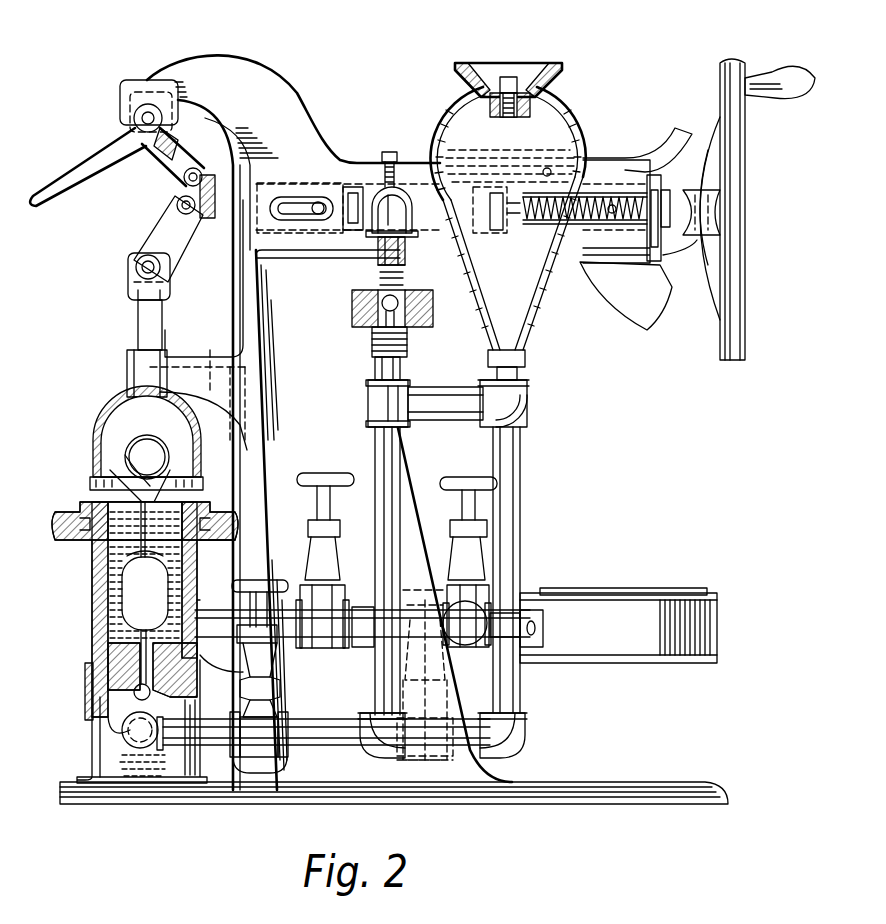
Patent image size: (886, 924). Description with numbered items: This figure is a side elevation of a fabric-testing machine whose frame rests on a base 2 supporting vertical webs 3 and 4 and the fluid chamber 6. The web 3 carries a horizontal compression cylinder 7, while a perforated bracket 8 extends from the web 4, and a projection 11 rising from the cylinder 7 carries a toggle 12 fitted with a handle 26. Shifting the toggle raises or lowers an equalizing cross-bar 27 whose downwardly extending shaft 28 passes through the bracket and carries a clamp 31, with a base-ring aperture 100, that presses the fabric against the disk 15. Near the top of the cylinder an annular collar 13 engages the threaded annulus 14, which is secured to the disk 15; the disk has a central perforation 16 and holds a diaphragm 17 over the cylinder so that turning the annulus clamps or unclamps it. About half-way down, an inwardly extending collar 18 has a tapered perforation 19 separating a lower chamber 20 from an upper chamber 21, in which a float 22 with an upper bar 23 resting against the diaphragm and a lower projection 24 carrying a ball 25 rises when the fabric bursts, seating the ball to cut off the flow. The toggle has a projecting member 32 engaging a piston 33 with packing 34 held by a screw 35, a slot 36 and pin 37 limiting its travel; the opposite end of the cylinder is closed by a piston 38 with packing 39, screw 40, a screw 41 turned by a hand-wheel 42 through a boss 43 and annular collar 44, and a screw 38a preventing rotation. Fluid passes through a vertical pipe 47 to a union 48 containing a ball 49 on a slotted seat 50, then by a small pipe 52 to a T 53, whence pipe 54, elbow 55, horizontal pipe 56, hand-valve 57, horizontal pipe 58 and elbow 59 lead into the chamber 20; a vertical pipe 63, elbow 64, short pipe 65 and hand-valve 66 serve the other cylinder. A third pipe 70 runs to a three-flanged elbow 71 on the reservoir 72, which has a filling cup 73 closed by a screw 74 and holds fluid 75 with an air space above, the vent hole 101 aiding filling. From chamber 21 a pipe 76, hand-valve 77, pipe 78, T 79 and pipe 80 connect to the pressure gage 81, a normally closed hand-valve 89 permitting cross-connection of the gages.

The base 2 is at (598, 808).
The vertical web 3 is at (416, 500).
The vertical web 4 is at (237, 445).
The fluid chamber 6 is at (198, 604).
The compression cylinder 7 is at (415, 156).
The perforated bracket 8 is at (217, 353).
The projection 11 is at (238, 55).
The toggle 12 is at (157, 150).
The annular collar 13 is at (90, 534).
The annulus 14 is at (208, 540).
The disk 15 is at (84, 510).
The central perforation 16 is at (196, 480).
The diaphragm 17 is at (115, 490).
The perforated collar 18 is at (132, 648).
The perforation 19 is at (88, 676).
The chamber 20 is at (100, 706).
The chamber 21 is at (92, 600).
The float 22 is at (145, 575).
The bar 23 is at (144, 573).
The second projection 24 is at (152, 636).
The ball 25 is at (133, 717).
The handle 26 is at (92, 166).
The equalizing cross-bar 27 is at (123, 286).
The shaft 28 is at (129, 343).
The clamp 31 is at (97, 440).
The projecting member 32 is at (219, 210).
The piston 33 is at (307, 239).
The packing 34 is at (372, 188).
The screw 35 is at (355, 232).
The slot 36 is at (288, 196).
The pin 37 is at (317, 201).
The piston 38 is at (622, 240).
The screw 38a is at (550, 168).
The packing 39 is at (493, 240).
The screw 40 is at (490, 200).
The screw 41 is at (622, 193).
The hand-wheel 42 is at (713, 89).
The boss 43 is at (659, 258).
The annular collar 44 is at (660, 180).
The vertical pipe 47 is at (410, 249).
The union 48 is at (348, 316).
The ball 49 is at (398, 300).
The seat 50 is at (406, 335).
The small pipe 52 is at (375, 367).
The T 53 is at (368, 397).
The pipe 54 is at (379, 441).
The elbow 55 is at (396, 758).
The horizontal pipe 56 is at (352, 757).
The hand-valve 57 is at (284, 706).
The horizontal pipe 58 is at (215, 716).
The elbow 59 is at (123, 745).
The vertical pipe 63 is at (527, 515).
The elbow 64 is at (524, 734).
The short pipe 65 is at (473, 709).
The hand-valve 66 is at (429, 769).
The third pipe 70 is at (450, 422).
The three-flanged elbow 71 is at (518, 418).
The reservoir 72 is at (540, 292).
The cup 73 is at (478, 68).
The screw 74 is at (514, 70).
The fluid 75 is at (528, 150).
The pipe 76 is at (250, 640).
The hand-valve 77 is at (318, 566).
The pipe 78 is at (364, 648).
The T 79 is at (470, 648).
The pipe 80 is at (505, 646).
The pressure gage 81 is at (628, 666).
The hand-valve 89 is at (450, 526).
The base-ring aperture 100 is at (170, 446).
The vent hole 101 is at (394, 147).